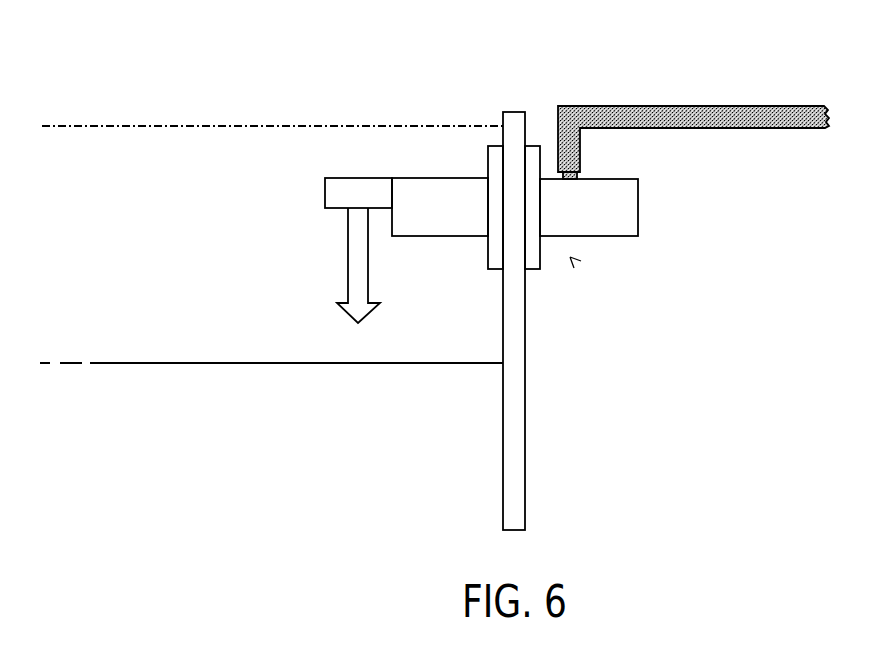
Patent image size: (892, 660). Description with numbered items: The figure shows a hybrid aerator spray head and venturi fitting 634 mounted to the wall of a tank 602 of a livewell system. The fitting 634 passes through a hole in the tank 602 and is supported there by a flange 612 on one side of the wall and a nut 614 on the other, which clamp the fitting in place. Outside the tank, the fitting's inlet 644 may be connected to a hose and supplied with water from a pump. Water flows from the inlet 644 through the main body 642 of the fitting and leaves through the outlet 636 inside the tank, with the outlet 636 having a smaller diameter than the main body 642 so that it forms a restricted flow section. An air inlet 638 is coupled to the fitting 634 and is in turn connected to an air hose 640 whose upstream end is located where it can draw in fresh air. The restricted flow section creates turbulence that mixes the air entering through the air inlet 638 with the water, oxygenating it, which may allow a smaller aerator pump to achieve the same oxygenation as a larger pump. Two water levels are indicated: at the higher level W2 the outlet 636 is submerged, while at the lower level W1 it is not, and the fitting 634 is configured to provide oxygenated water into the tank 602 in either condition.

The tank 602 is at (525, 455).
The flange 612 is at (533, 258).
The nut 614 is at (495, 262).
The hybrid aerator spray head and venturi fitting 634 is at (571, 258).
The outlet 636 is at (333, 208).
The air inlet 638 is at (562, 176).
The air hose 640 is at (690, 107).
The main body 642 is at (441, 178).
The inlet 644 is at (638, 210).
The water level W1 is at (155, 363).
The water level W2 is at (232, 126).